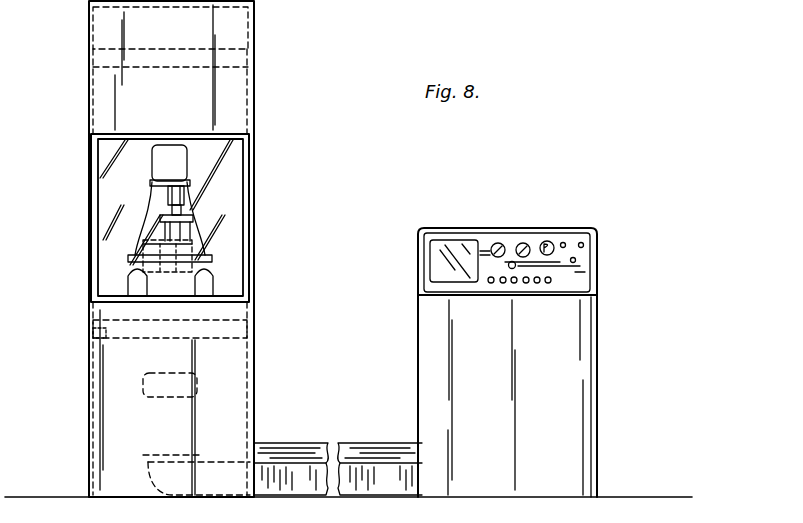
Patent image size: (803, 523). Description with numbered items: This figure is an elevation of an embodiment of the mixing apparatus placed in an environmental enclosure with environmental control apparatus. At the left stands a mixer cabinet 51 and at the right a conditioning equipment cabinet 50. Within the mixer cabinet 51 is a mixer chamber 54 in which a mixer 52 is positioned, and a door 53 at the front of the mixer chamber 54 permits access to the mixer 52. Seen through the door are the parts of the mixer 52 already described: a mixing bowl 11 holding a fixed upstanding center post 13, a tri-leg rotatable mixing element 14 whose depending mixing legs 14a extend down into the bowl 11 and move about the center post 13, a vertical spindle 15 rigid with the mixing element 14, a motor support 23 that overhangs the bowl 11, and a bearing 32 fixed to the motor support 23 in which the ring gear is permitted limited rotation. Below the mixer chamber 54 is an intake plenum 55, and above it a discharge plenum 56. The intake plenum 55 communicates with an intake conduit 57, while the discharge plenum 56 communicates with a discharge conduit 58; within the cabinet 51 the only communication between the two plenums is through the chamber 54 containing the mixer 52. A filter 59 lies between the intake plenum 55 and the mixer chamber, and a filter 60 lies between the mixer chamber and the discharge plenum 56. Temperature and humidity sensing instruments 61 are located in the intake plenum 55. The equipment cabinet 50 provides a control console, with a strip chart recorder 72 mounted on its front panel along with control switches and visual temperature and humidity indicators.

The mixing bowl 11 is at (143, 245).
The center post 13 is at (206, 268).
The mixing element 14 is at (188, 216).
The mixing legs 14a is at (192, 228).
The spindle 15 is at (182, 209).
The motor support 23 is at (158, 198).
The bearing 32 is at (155, 185).
The conditioning equipment cabinet 50 is at (599, 327).
The mixer cabinet 51 is at (257, 328).
The mixer 52 is at (148, 158).
The door 53 is at (95, 280).
The mixer chamber 54 is at (108, 224).
The intake plenum 55 is at (116, 445).
The discharge plenum 56 is at (110, 25).
The intake conduit 57 is at (357, 472).
The discharge conduit 58 is at (315, 443).
The filter 59 is at (93, 333).
The filter 60 is at (110, 64).
The temperature and humidity sensing instruments 61 is at (200, 379).
The strip chart recorder 72 is at (459, 248).